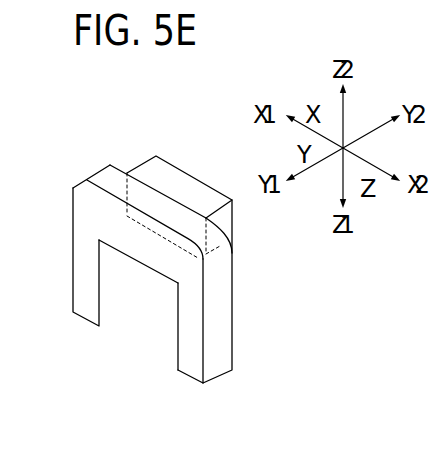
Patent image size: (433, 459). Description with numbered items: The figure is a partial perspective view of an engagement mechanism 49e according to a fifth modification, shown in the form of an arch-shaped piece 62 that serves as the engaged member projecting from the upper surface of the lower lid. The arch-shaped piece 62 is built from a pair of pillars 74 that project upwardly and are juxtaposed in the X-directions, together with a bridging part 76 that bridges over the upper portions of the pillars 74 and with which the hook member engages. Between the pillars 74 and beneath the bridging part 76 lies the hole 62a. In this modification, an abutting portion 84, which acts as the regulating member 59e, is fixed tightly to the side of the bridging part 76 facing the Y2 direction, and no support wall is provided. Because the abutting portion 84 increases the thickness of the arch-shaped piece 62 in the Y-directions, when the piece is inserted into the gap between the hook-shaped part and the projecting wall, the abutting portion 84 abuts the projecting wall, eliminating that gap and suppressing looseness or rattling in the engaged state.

The engagement mechanism 49e is at (130, 101).
The abutting portion 84 is at (171, 186).
The regulating member 59e is at (171, 185).
The arch-shaped piece 62 is at (66, 279).
The pillars 74 is at (87, 252).
The bridging part 76 is at (150, 256).
The hole 62a is at (177, 342).